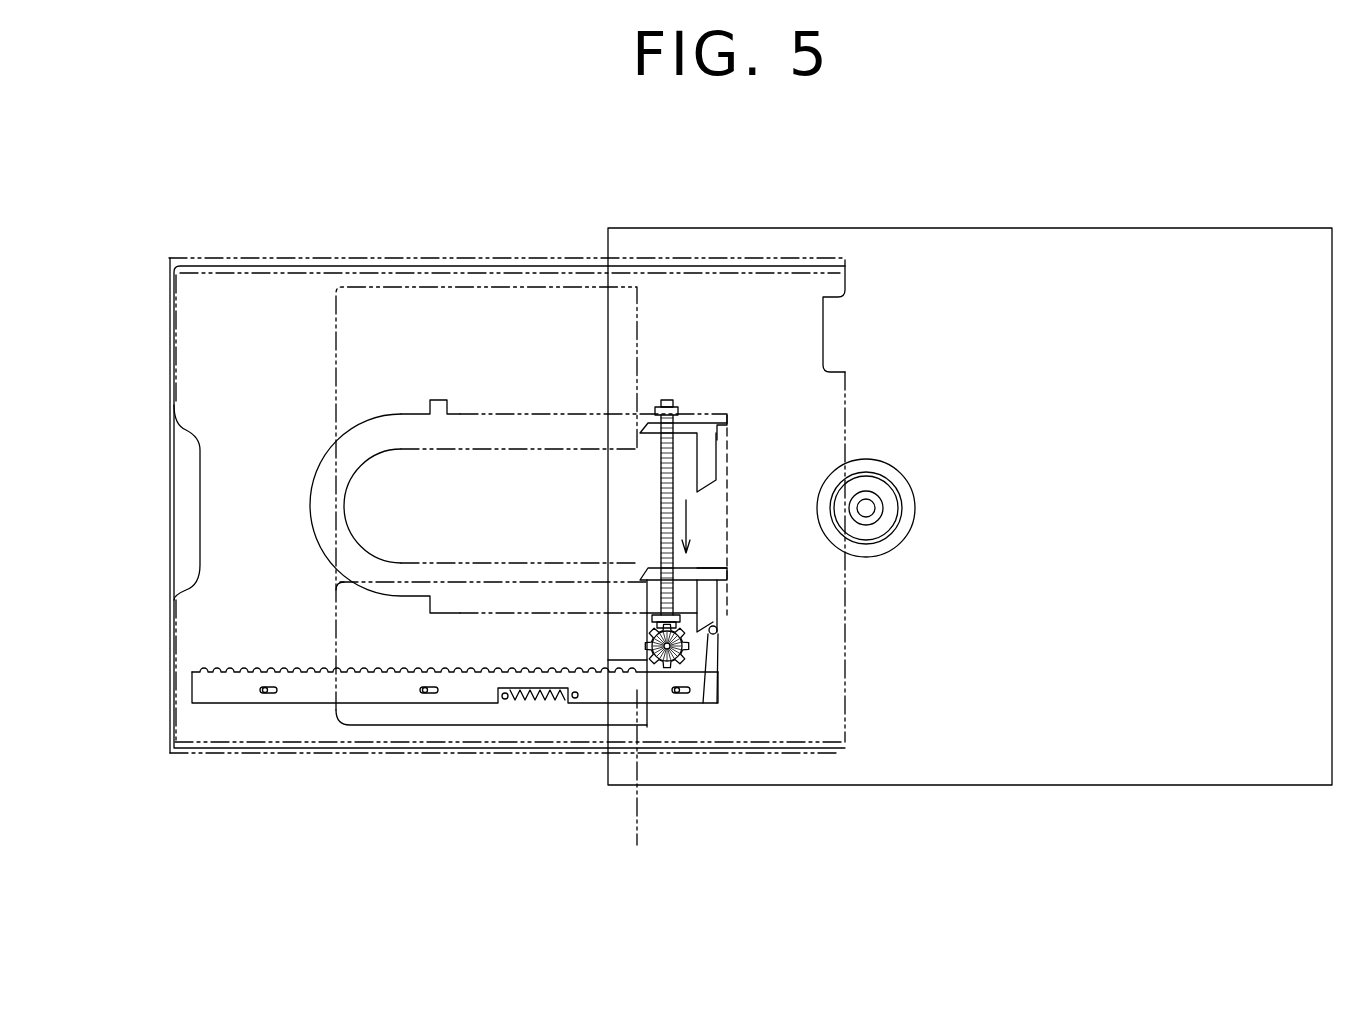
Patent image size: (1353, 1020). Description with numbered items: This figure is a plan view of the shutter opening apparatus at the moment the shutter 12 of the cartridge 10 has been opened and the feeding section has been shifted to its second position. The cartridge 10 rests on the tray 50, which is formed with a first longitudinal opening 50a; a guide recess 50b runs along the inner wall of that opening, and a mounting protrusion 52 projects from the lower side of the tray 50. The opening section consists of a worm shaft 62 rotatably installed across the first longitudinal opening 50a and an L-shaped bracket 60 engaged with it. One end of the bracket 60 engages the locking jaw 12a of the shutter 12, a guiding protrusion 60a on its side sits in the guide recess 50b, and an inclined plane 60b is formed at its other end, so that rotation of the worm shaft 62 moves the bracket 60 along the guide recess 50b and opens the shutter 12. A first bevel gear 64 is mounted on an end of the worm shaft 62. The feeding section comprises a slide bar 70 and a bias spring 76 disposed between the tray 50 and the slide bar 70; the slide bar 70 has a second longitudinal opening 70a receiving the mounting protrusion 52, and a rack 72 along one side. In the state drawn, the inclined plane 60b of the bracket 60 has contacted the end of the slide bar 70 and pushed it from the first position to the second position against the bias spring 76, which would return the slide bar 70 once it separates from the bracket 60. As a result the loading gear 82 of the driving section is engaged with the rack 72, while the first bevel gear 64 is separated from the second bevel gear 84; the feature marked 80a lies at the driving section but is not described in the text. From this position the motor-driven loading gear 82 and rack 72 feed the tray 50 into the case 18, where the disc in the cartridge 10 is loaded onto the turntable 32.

The cartridge 10 is at (258, 285).
The shutter 12 is at (372, 582).
The locking jaw 12a is at (655, 785).
The case 18 is at (1068, 762).
The turntable 32 is at (877, 488).
The tray 50 is at (281, 760).
The first longitudinal opening 50a is at (480, 414).
The guide recess 50b is at (722, 445).
The mounting protrusion 52 is at (420, 690).
The bracket 60 is at (708, 597).
The guiding protrusion 60a is at (728, 575).
The inclined plane 60b is at (714, 634).
The worm shaft 62 is at (662, 500).
The first bevel gear 64 is at (706, 650).
The slide bar 70 is at (366, 703).
The second longitudinal opening 70a is at (437, 693).
The rack 72 is at (607, 700).
The bias spring 76 is at (527, 700).
The slot 80a is at (640, 677).
The loading gear 82 is at (680, 660).
The second bevel gear 84 is at (674, 693).